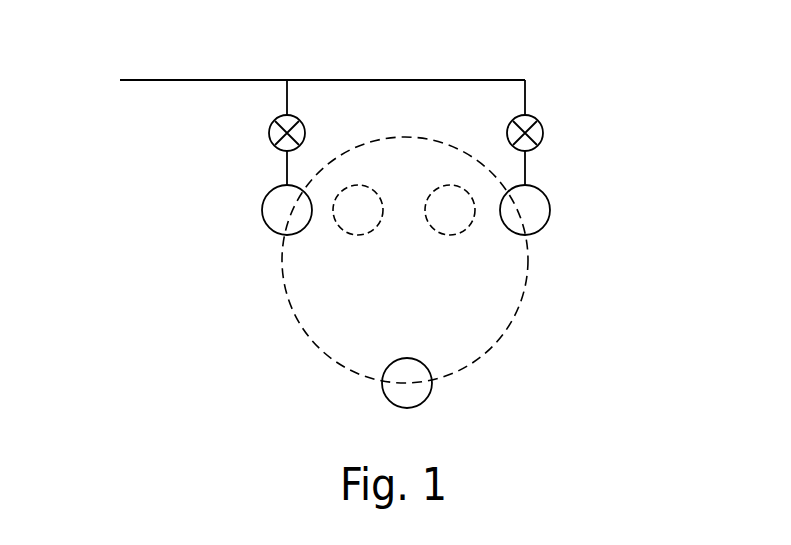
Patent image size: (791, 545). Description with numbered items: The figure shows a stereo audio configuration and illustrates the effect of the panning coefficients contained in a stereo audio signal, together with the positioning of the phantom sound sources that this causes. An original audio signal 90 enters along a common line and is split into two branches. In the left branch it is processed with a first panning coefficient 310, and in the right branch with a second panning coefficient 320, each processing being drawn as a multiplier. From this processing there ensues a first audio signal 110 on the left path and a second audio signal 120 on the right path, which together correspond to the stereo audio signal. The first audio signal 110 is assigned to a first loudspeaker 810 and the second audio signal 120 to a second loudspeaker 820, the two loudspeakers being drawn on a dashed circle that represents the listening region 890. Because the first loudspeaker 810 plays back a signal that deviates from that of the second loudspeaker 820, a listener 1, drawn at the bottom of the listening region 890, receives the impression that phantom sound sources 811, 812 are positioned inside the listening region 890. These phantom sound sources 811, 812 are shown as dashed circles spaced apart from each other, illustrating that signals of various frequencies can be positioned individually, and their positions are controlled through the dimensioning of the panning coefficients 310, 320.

The original audio signal 90 is at (140, 80).
The first audio signal 110 is at (285, 172).
The second audio signal 120 is at (527, 177).
The first panning coefficient 310 is at (265, 143).
The second panning coefficient 320 is at (543, 122).
The first loudspeaker 810 is at (262, 212).
The second loudspeaker 820 is at (552, 210).
The phantom sound source 811 is at (340, 228).
The phantom sound source 812 is at (468, 228).
The listening region 890 is at (308, 337).
The listener 1 is at (432, 388).